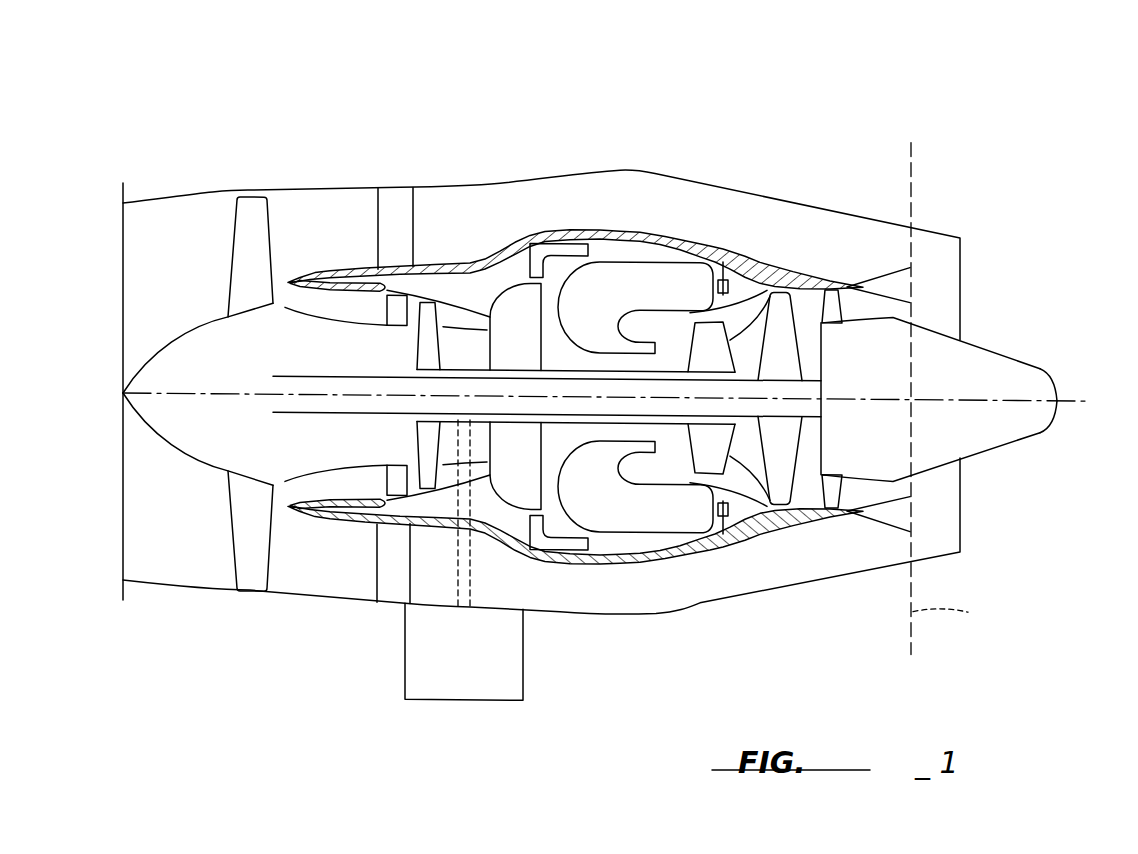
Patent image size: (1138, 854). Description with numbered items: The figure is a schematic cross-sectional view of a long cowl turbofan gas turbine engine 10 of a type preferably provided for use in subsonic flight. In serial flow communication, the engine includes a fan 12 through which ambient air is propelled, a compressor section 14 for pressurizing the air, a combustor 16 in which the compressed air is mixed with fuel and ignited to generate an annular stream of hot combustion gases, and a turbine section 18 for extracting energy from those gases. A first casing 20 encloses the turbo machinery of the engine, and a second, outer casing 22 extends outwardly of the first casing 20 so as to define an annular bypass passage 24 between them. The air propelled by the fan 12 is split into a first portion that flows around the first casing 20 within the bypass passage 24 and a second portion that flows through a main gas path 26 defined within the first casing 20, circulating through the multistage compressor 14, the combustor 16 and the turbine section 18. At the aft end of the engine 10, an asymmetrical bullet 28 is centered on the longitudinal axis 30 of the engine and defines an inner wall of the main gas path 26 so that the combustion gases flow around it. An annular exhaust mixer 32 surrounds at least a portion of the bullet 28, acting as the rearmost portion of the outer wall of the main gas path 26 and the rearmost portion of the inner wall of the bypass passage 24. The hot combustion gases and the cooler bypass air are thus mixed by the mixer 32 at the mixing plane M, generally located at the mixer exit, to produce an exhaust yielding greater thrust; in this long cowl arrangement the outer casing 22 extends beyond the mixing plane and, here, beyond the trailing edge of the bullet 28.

The long cowl turbofan gas turbine engine 10 is at (612, 364).
The fan 12 is at (245, 520).
The compressor section 14 is at (458, 310).
The combustor 16 is at (635, 281).
The turbine section 18 is at (712, 335).
The first casing 20 is at (583, 563).
The outer casing 22 is at (656, 609).
The bypass passage 24 is at (493, 207).
The main gas path 26 is at (337, 306).
The asymmetrical bullet 28 is at (985, 422).
The longitudinal axis 30 is at (1075, 377).
The exhaust mixer 32 is at (877, 267).